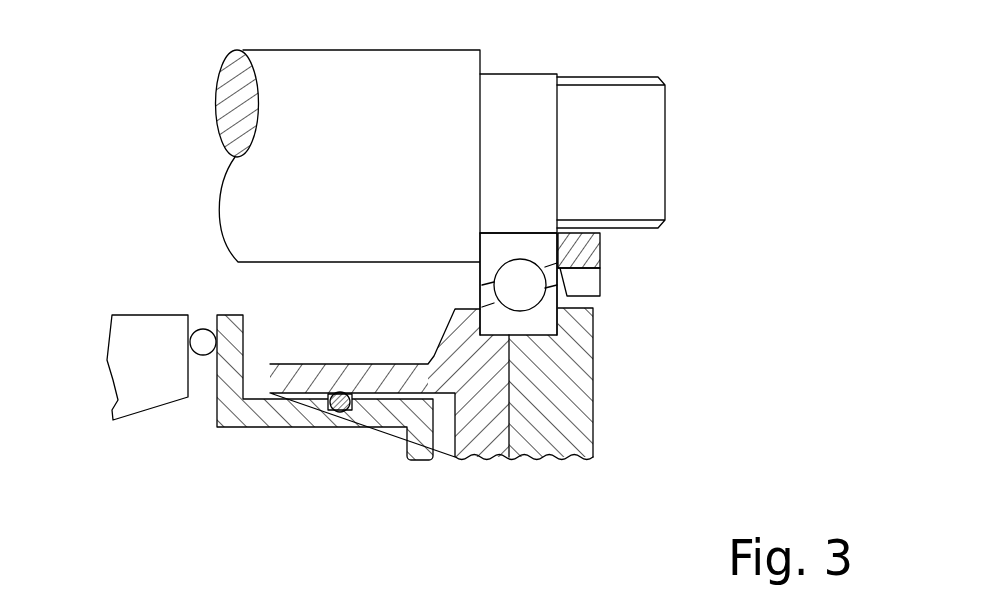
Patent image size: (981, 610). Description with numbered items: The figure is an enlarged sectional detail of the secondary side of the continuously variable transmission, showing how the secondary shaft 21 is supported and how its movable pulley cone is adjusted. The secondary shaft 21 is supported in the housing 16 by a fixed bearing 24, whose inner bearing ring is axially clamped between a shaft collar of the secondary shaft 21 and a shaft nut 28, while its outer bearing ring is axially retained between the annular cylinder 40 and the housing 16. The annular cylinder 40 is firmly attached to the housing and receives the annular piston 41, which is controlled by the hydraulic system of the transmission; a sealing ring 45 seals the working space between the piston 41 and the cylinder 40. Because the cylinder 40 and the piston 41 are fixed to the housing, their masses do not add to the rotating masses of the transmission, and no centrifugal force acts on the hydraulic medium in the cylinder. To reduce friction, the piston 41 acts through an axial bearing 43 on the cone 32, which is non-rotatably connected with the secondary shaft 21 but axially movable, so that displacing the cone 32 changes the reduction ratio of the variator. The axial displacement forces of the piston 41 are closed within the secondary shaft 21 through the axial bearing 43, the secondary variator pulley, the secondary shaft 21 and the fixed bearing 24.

The housing 16 is at (560, 451).
The secondary shaft 21 is at (628, 107).
The fixed bearing 24 is at (538, 327).
The shaft nut 28 is at (593, 255).
The cone 32 is at (133, 397).
The annular cylinder 40 is at (495, 447).
The annular piston 41 is at (305, 417).
The axial bearing 43 is at (203, 342).
The sealing ring 45 is at (347, 410).